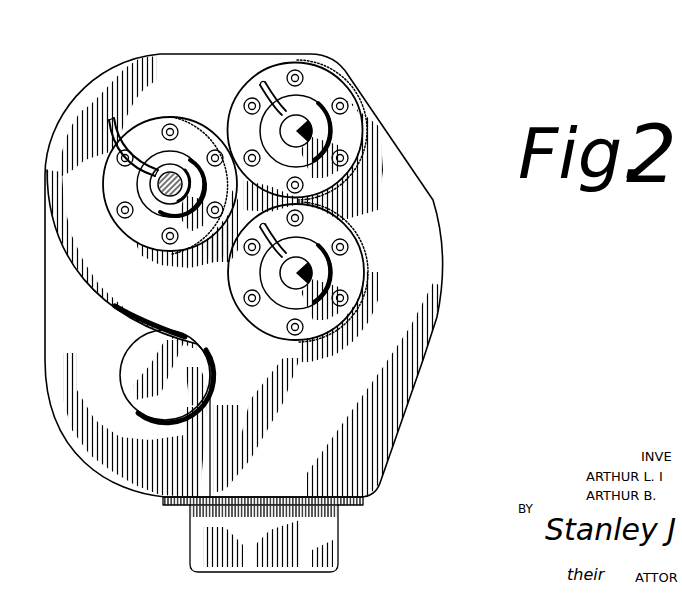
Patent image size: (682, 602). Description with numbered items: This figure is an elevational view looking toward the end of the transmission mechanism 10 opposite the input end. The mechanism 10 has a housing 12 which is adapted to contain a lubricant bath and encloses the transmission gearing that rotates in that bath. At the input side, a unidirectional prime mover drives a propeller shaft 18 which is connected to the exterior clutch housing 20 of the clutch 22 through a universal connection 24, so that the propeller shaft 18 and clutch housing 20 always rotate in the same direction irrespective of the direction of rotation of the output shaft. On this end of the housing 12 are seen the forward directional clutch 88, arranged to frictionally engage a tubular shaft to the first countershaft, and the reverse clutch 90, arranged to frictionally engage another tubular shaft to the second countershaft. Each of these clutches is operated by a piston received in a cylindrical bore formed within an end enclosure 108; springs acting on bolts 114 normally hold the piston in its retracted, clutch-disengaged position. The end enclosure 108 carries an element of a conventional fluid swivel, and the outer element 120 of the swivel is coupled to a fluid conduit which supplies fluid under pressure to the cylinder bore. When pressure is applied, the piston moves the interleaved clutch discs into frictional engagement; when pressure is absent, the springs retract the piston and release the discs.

The transmission mechanism 10 is at (465, 290).
The housing 12 is at (182, 54).
The propeller shaft 18 is at (195, 158).
The clutch housing 20 is at (187, 150).
The clutch 22 is at (205, 133).
The universal connection 24 is at (165, 166).
The forward directional clutch 88 is at (320, 104).
The reverse clutch 90 is at (342, 222).
The end enclosure 108 is at (158, 168).
The bolts 114 is at (171, 125).
The outer swivel element 120 is at (335, 120).